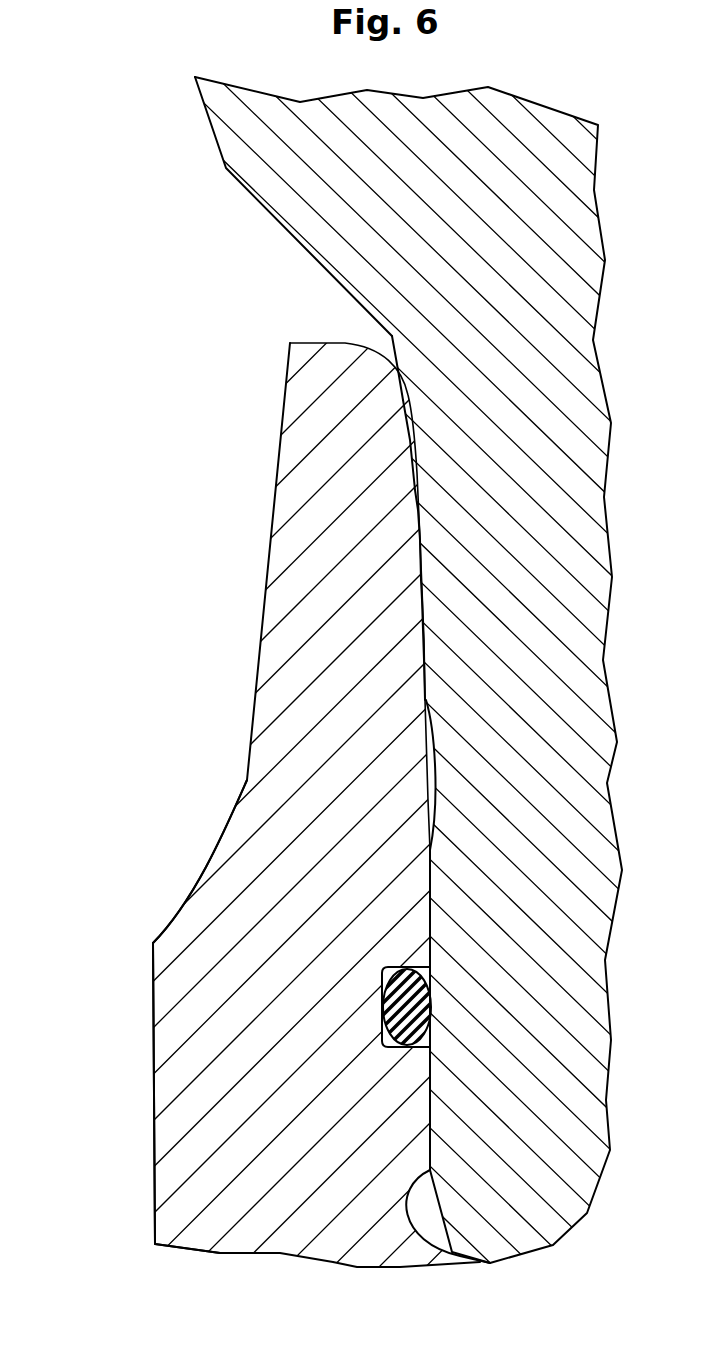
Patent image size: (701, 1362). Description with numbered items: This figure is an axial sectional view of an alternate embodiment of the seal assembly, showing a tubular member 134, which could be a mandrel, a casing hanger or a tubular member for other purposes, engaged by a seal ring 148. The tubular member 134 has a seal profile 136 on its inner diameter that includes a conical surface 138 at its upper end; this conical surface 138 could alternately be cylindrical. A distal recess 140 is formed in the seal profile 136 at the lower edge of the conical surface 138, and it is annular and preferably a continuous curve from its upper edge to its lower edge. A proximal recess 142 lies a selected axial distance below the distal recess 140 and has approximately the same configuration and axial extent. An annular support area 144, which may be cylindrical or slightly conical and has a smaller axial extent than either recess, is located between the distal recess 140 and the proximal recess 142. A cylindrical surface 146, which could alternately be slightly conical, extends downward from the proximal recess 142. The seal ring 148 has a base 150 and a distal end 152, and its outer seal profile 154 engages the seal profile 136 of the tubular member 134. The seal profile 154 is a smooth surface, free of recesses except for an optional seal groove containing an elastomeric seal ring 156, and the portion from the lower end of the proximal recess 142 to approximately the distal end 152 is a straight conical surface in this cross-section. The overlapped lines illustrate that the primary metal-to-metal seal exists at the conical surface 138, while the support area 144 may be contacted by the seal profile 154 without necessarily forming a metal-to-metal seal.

The tubular member 134 is at (277, 186).
The seal profile 136 is at (404, 606).
The conical surface 138 is at (397, 397).
The distal recess 140 is at (418, 495).
The proximal recess 142 is at (430, 740).
The support area 144 is at (415, 665).
The cylindrical surface 146 is at (430, 1107).
The seal ring 148 is at (192, 925).
The base 150 is at (168, 1217).
The distal end 152 is at (308, 342).
The seal profile 154 is at (425, 568).
The elastomeric seal ring 156 is at (380, 1013).